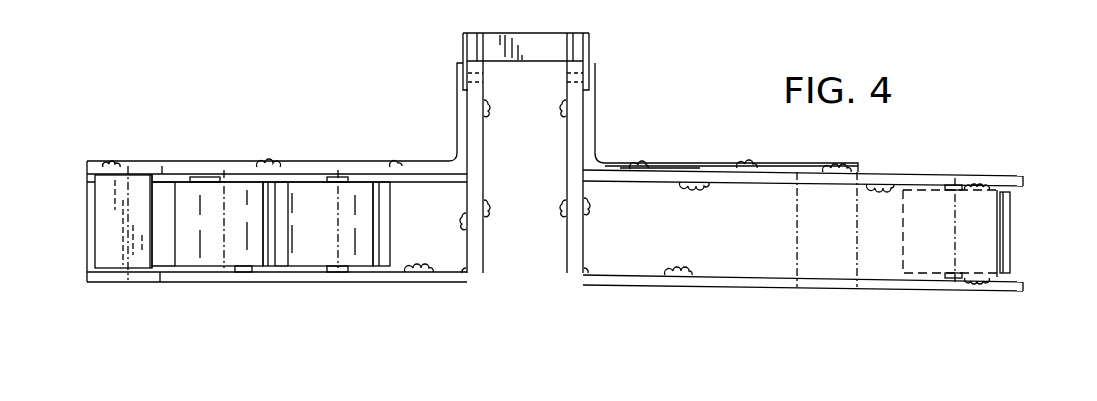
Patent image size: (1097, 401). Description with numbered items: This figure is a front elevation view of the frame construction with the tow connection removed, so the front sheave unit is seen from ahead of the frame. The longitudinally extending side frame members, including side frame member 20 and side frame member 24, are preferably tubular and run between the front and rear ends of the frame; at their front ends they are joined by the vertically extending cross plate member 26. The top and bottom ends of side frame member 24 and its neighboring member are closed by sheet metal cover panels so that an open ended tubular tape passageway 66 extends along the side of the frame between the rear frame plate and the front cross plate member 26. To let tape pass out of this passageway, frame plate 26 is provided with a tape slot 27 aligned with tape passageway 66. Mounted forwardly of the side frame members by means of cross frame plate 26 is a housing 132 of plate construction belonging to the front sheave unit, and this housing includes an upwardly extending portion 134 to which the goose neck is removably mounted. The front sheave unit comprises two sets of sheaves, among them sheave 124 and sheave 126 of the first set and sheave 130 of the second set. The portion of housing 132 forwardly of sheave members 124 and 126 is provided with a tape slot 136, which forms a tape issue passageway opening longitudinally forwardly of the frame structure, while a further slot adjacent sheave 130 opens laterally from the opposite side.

The side frame member 20 is at (795, 253).
The side frame member 24 is at (110, 266).
The cross plate member 26 is at (724, 167).
The tape slot 27 is at (152, 257).
The tape passageway 66 is at (165, 193).
The sheave 124 is at (251, 192).
The sheave 126 is at (316, 192).
The sheave 130 is at (1008, 240).
The housing 132 is at (648, 158).
The upwardly extending portion 134 is at (472, 113).
The tape slot 136 is at (283, 250).